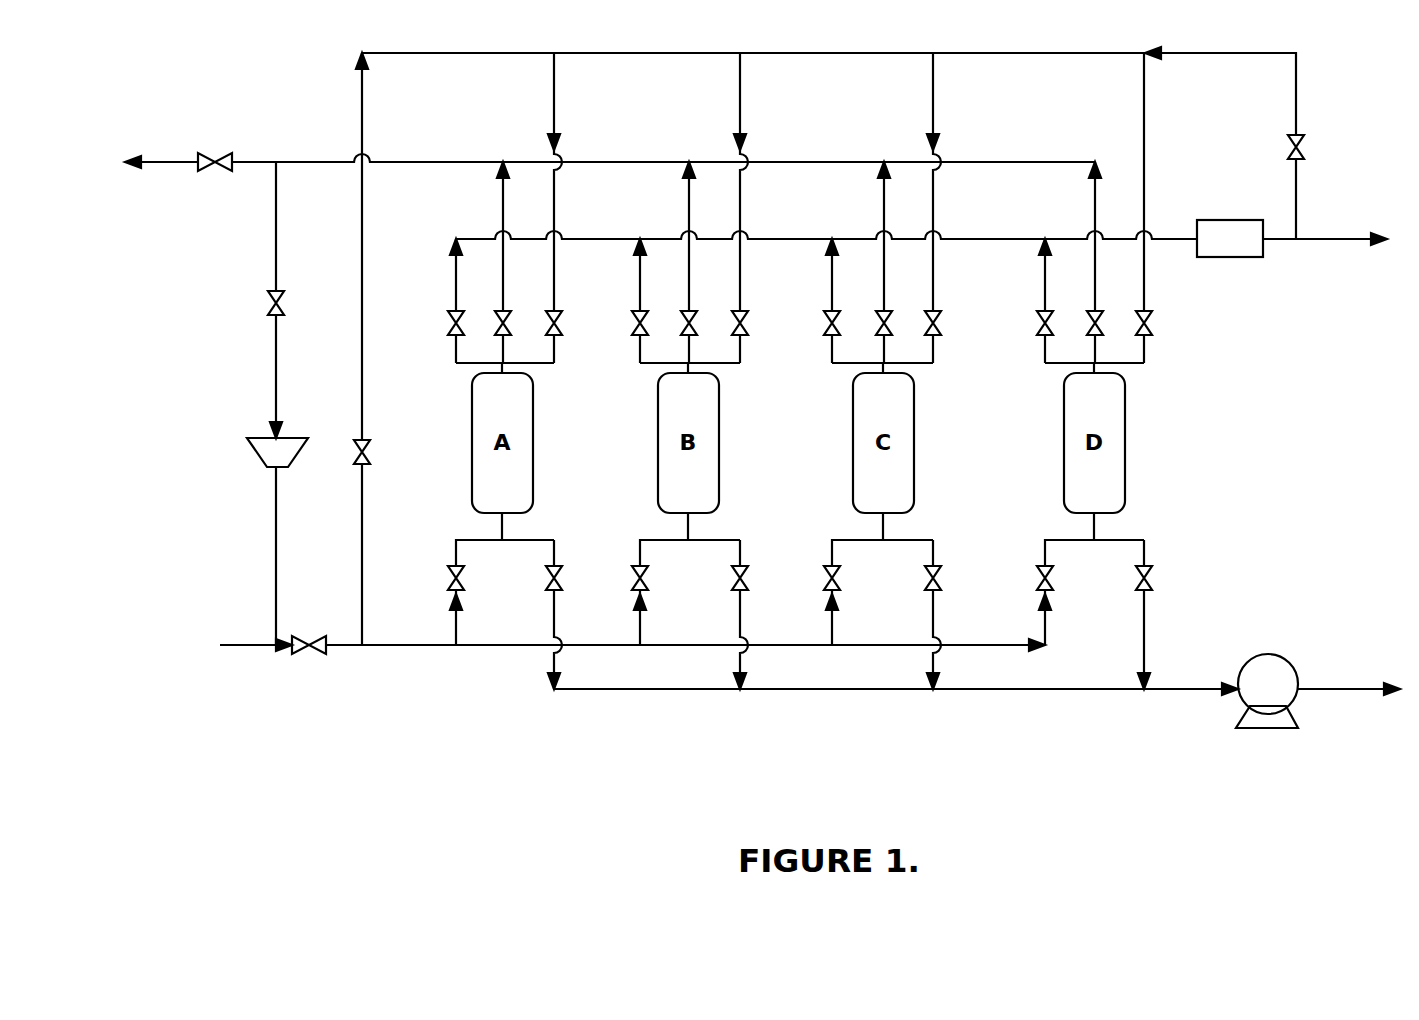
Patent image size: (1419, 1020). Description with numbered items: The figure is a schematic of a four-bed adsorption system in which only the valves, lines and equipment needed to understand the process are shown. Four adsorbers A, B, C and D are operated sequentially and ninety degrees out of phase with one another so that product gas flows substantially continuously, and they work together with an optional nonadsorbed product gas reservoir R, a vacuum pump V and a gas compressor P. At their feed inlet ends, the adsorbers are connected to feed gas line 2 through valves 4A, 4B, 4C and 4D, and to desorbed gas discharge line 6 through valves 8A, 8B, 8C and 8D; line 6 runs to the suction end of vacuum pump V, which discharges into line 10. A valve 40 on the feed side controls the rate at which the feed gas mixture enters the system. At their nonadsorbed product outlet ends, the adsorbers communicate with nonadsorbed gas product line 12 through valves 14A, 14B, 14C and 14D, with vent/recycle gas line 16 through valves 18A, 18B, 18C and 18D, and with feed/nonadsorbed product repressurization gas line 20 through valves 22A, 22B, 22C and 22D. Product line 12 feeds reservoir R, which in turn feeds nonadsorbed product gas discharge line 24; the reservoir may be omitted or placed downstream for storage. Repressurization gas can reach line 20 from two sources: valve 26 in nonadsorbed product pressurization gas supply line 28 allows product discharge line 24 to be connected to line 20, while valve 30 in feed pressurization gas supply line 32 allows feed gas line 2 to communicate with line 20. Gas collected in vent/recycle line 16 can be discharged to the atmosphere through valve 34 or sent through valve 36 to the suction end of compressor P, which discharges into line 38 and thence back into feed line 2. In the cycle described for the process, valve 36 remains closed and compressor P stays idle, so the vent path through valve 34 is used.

The feed gas line 2 is at (256, 648).
The valve 4A is at (448, 575).
The valve 4B is at (632, 575).
The valve 4C is at (824, 575).
The valve 4D is at (1037, 575).
The desorbed gas discharge line 6 is at (806, 690).
The valve 8A is at (548, 578).
The valve 8B is at (734, 578).
The valve 8C is at (927, 578).
The valve 8D is at (1138, 578).
The line 10 is at (1330, 689).
The nonadsorbed gas product line 12 is at (1166, 239).
The valve 14A is at (448, 320).
The valve 14B is at (632, 320).
The valve 14C is at (824, 320).
The valve 14D is at (1037, 320).
The vent/recycle gas line 16 is at (470, 162).
The valve 18A is at (507, 320).
The valve 18B is at (693, 320).
The valve 18C is at (888, 320).
The valve 18D is at (1099, 320).
The feed/nonadsorbed product repressurization gas line 20 is at (948, 53).
The valve 22A is at (560, 322).
The valve 22B is at (746, 322).
The valve 22C is at (939, 322).
The valve 22D is at (1150, 322).
The nonadsorbed product gas discharge line 24 is at (1322, 240).
The valve 26 is at (1302, 150).
The nonadsorbed product pressurization gas supply line 28 is at (1205, 53).
The valve 30 is at (372, 452).
The feed pressurization gas supply line 32 is at (362, 345).
The valve 34 is at (222, 162).
The valve 36 is at (268, 303).
The line 38 is at (276, 575).
The valve 40 is at (305, 650).
The gas compressor P is at (260, 460).
The nonadsorbed product gas reservoir R is at (1220, 257).
The vacuum pump V is at (1262, 728).